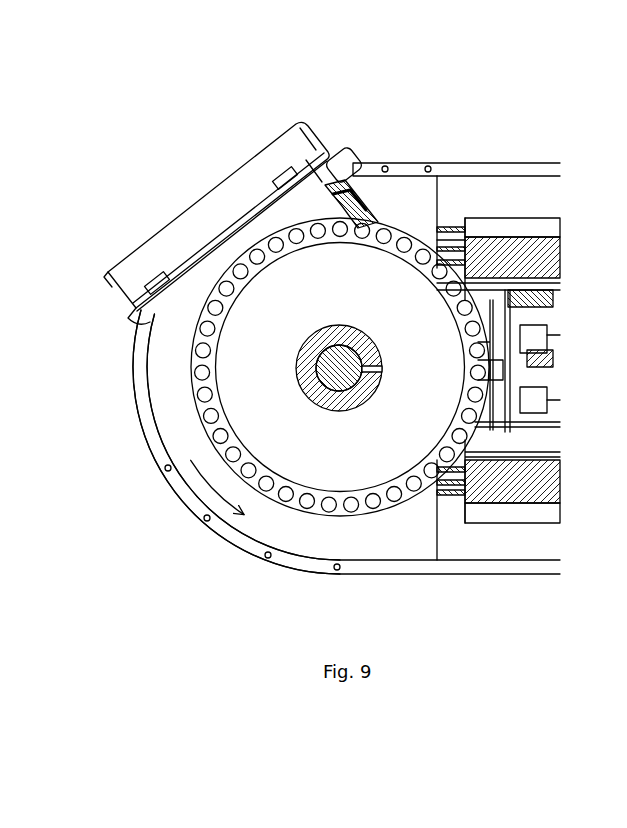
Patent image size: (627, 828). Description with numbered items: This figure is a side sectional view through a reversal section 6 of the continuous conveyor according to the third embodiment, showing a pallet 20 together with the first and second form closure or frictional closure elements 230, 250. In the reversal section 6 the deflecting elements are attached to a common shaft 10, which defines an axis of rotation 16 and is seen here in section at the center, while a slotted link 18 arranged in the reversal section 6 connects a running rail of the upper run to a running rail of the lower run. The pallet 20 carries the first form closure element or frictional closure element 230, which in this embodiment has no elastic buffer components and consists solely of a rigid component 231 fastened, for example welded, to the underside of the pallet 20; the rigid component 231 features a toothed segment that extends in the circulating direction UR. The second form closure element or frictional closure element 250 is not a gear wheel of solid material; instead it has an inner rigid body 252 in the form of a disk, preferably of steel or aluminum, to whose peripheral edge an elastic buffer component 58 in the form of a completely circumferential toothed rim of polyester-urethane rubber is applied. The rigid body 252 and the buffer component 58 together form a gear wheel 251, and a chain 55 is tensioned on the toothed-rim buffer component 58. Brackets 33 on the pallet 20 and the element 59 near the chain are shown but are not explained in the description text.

The reversal section 6 is at (190, 533).
The shaft 10 is at (339, 373).
The axis of rotation 16 is at (338, 362).
The slotted link 18 is at (510, 193).
The pallet 20 is at (243, 183).
The brackets 33 is at (281, 168).
The chain 55 is at (340, 435).
The elastic buffer component 58 is at (340, 435).
The outer race 59 is at (307, 517).
The first form closure element or frictional closure element 230 is at (262, 224).
The rigid component 231 is at (318, 153).
The second form closure element or frictional closure element 250 is at (197, 432).
The gear wheel 251 is at (192, 397).
The rigid body 252 is at (272, 376).
The circulating direction UR is at (195, 511).